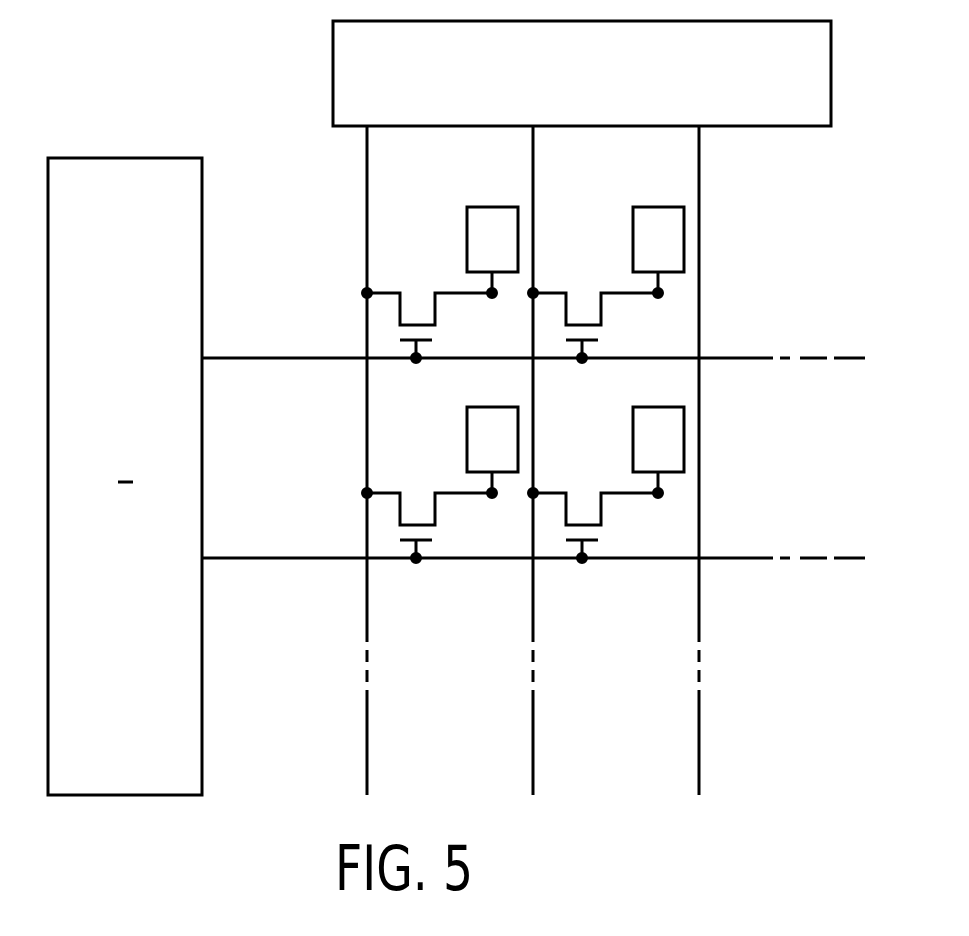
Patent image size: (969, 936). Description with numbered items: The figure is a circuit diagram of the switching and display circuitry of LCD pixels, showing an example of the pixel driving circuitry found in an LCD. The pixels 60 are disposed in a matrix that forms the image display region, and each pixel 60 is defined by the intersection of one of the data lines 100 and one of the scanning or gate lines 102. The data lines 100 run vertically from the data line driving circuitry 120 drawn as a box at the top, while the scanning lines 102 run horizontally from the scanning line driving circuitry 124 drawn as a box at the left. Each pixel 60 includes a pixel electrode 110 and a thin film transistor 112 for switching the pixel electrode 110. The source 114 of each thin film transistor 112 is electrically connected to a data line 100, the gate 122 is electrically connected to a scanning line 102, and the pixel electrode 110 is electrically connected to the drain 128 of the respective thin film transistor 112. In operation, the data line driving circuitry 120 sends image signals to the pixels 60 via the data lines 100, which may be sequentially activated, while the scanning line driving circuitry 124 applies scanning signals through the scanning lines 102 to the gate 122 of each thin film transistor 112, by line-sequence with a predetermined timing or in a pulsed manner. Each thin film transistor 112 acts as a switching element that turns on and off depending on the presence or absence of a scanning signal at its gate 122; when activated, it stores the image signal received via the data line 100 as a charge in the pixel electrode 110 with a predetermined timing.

The pixel 60 is at (333, 297).
The data line 100 is at (533, 745).
The scanning line 102 is at (280, 359).
The pixel electrode 110 is at (490, 207).
The thin film transistor 112 is at (448, 340).
The source 114 is at (368, 292).
The data line driving circuitry 120 is at (333, 72).
The gate 122 is at (418, 360).
The scanning line driving circuitry 124 is at (127, 158).
The drain 128 is at (492, 292).